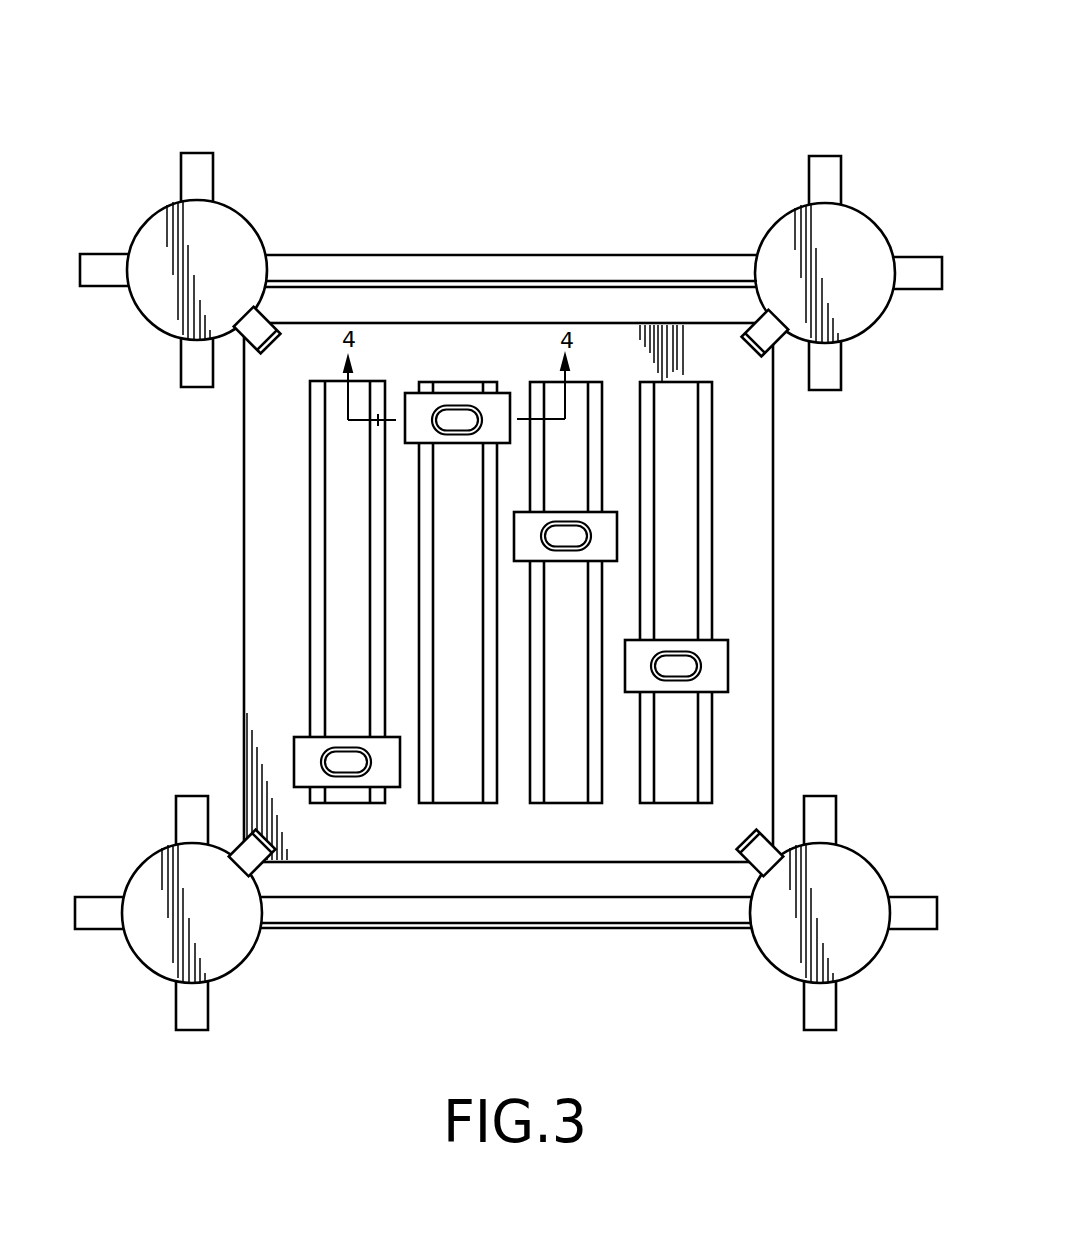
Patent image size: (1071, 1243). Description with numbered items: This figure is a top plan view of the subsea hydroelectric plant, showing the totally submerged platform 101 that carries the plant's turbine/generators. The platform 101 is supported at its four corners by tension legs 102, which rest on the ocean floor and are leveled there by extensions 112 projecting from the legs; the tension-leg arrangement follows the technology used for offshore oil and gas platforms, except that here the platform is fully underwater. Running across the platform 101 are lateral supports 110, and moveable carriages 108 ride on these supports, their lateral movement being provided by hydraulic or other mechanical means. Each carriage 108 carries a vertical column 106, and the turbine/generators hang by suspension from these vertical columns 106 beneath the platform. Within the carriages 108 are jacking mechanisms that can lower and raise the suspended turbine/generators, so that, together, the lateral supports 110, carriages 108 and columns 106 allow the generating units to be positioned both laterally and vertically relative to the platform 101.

The platform 101 is at (288, 451).
The tension legs 102 is at (215, 243).
The vertical columns 106 is at (458, 418).
The moveable carriages 108 is at (490, 407).
The lateral supports 110 is at (368, 595).
The extensions 112 is at (833, 170).